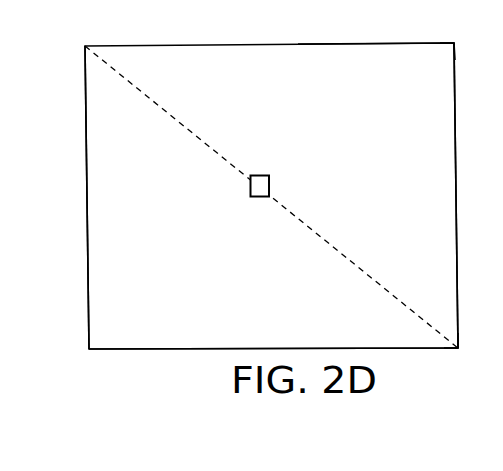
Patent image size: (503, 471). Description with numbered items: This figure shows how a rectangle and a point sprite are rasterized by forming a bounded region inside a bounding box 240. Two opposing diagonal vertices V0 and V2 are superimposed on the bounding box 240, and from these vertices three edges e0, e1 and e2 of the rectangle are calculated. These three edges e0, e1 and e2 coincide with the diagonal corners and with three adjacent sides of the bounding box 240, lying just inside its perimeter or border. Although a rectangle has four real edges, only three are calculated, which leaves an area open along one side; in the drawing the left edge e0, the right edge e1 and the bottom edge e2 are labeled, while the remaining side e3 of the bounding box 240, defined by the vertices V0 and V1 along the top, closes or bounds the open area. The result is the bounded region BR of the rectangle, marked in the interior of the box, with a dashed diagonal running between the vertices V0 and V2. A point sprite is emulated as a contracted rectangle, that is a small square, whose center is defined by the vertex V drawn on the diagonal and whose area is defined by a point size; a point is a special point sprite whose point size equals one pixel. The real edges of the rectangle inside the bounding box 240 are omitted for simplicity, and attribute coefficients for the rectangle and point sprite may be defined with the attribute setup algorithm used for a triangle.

The bounding box 240 is at (129, 46).
The edge e0 is at (89, 247).
The edge e1 is at (455, 122).
The edge e2 is at (139, 349).
The side e3 is at (298, 44).
The vertex V0 is at (262, 186).
The vertex V1 is at (455, 42).
The vertex V2 is at (458, 352).
The vertex V is at (259, 175).
The bounded region BR is at (184, 230).